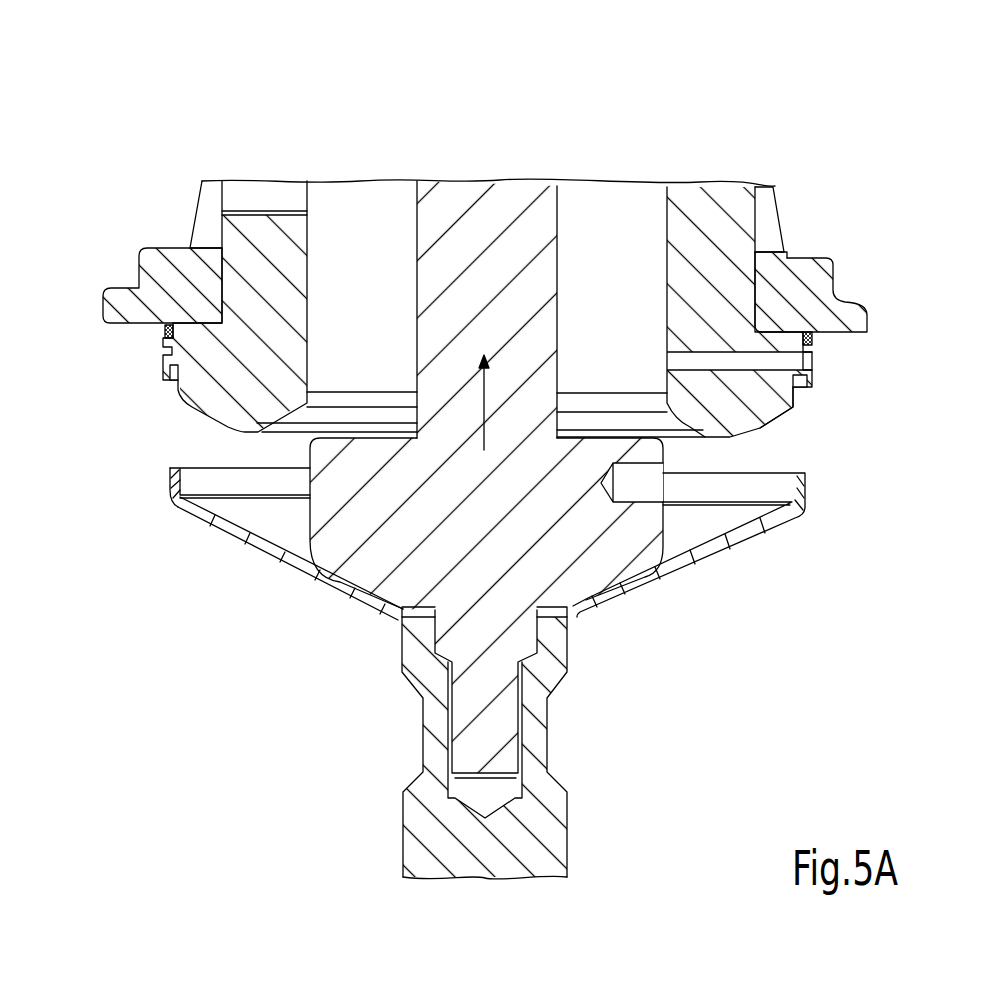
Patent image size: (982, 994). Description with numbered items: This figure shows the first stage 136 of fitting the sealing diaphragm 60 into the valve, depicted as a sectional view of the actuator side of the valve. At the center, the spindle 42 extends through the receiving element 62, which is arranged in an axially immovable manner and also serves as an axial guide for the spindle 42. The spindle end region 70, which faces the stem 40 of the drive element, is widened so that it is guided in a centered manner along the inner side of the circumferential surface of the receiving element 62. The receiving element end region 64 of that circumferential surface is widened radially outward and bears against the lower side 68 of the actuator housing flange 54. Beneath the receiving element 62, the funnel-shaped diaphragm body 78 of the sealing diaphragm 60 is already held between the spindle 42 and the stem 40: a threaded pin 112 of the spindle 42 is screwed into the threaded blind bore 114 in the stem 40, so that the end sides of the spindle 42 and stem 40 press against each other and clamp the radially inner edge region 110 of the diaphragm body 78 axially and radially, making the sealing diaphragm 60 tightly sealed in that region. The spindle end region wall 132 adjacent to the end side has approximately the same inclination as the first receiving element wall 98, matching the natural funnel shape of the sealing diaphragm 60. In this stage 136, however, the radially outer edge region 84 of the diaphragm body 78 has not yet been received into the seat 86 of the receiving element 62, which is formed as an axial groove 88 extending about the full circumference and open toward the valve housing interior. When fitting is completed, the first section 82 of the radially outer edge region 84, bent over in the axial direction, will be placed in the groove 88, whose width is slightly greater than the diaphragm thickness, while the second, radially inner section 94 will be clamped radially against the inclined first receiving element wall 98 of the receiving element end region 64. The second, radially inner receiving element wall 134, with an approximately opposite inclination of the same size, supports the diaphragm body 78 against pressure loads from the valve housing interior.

The stem 40 is at (423, 823).
The spindle 42 is at (505, 223).
The actuator housing flange 54 is at (823, 296).
The sealing diaphragm 60 is at (250, 568).
The receiving element 62 is at (234, 256).
The receiving element end region 64 is at (132, 307).
The lower side 68 is at (784, 253).
The spindle end region 70 is at (563, 487).
The diaphragm body 78 is at (673, 571).
The first section 82 is at (170, 470).
The radially outer edge region 84 is at (160, 511).
The seat 86 is at (805, 412).
The axial groove 88 is at (808, 388).
The second, radially inner section 94 is at (185, 512).
The first receiving element wall 98 is at (213, 422).
The radially inner edge region 110 is at (392, 625).
The pin 112 is at (503, 735).
The blind bore 114 is at (523, 757).
The spindle end region wall 132 is at (623, 598).
The second, radially inner receiving element wall 134 is at (195, 352).
The stage 136 is at (396, 124).